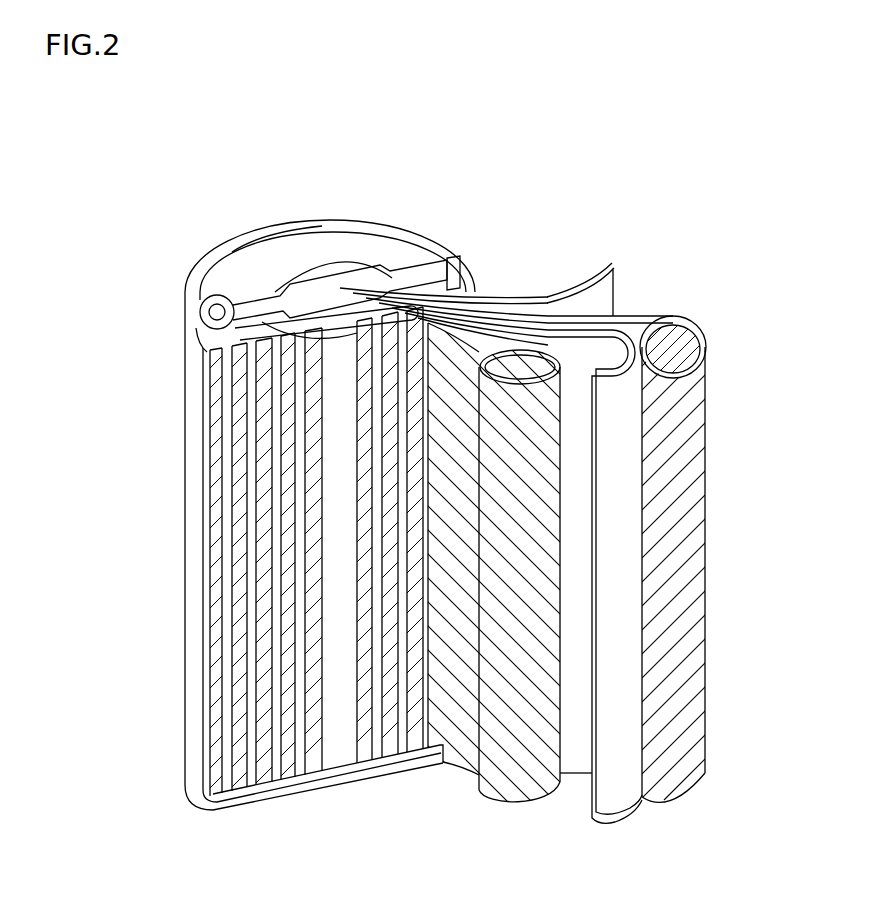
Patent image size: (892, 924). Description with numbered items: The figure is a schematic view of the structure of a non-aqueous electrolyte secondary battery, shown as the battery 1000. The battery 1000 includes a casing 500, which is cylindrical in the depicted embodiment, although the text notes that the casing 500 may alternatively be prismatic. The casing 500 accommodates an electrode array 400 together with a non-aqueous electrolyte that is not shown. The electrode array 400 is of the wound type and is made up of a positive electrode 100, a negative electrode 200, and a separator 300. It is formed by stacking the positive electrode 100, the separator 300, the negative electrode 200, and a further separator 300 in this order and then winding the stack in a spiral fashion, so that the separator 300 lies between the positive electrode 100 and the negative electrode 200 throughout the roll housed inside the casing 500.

The battery 1000 is at (143, 138).
The casing 500 is at (186, 474).
The electrode array 400 is at (700, 220).
The positive electrode 100 is at (493, 352).
The negative electrode 200 is at (667, 335).
The separator 300 is at (549, 340).